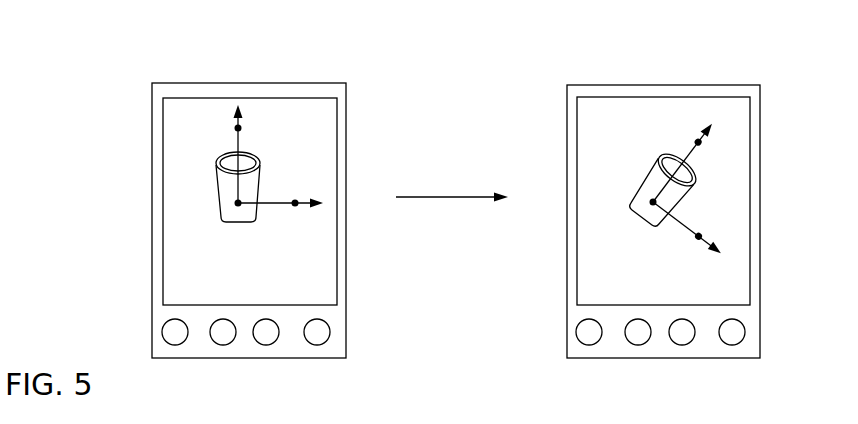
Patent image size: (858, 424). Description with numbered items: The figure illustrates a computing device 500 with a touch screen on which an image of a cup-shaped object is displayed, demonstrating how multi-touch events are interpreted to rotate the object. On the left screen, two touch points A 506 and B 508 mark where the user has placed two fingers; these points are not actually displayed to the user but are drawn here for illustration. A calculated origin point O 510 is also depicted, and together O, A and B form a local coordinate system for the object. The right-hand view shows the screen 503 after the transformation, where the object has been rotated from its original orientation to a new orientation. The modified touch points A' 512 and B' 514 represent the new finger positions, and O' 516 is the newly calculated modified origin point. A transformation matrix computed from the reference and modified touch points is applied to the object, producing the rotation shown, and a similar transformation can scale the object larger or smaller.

The computing device 500 is at (288, 82).
The screen 503 is at (749, 110).
The touch point A 506 is at (295, 203).
The touch point B 508 is at (238, 128).
The origin point O 510 is at (238, 203).
The modified touch point A' 512 is at (697, 238).
The modified touch point B' 514 is at (698, 144).
The modified origin point O' 516 is at (653, 202).